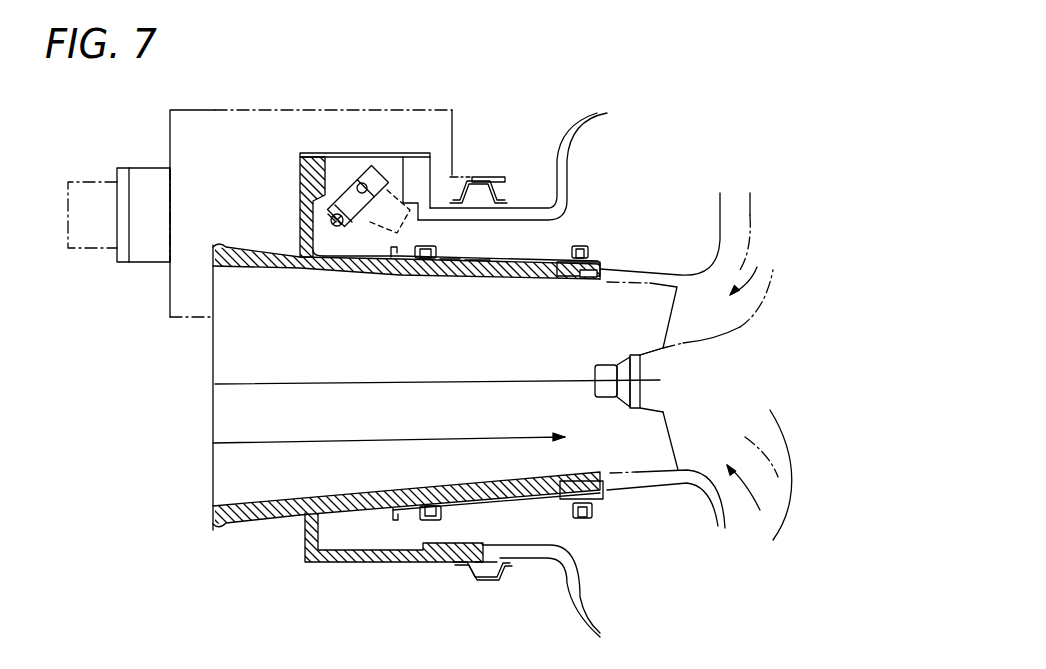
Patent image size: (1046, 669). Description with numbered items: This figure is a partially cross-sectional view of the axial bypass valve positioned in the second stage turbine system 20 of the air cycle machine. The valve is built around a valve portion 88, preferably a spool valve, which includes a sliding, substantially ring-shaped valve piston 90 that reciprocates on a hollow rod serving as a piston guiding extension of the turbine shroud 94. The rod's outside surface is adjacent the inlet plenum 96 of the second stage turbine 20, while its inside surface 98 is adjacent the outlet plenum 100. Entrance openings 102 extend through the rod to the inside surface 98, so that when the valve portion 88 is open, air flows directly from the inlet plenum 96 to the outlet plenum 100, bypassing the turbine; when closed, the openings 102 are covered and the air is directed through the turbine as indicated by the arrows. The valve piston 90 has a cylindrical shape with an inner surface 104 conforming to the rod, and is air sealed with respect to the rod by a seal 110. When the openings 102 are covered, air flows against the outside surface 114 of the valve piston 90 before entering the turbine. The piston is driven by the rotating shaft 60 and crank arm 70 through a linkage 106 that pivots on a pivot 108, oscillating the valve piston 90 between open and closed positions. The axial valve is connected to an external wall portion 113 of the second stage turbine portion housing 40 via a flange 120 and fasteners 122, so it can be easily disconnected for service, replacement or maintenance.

The second stage turbine system 20 is at (430, 343).
The second stage turbine portion housing 40 is at (580, 617).
The rotating shaft 60 is at (368, 172).
The crank arm 70 is at (340, 166).
The valve portion 88 is at (458, 237).
The valve piston 90 is at (518, 285).
The turbine shroud 94 is at (740, 208).
The inlet plenum 96 is at (638, 170).
The inside surface 98 is at (475, 267).
The outlet plenum 100 is at (466, 360).
The entrance openings 102 is at (567, 245).
The inner surface 104 is at (450, 267).
The linkage 106 is at (303, 273).
The pivot 108 is at (325, 222).
The seal 110 is at (420, 270).
The external wall portion 113 is at (547, 558).
The outside surface 114 is at (475, 512).
The flange 120 is at (463, 567).
The fasteners 122 is at (487, 580).